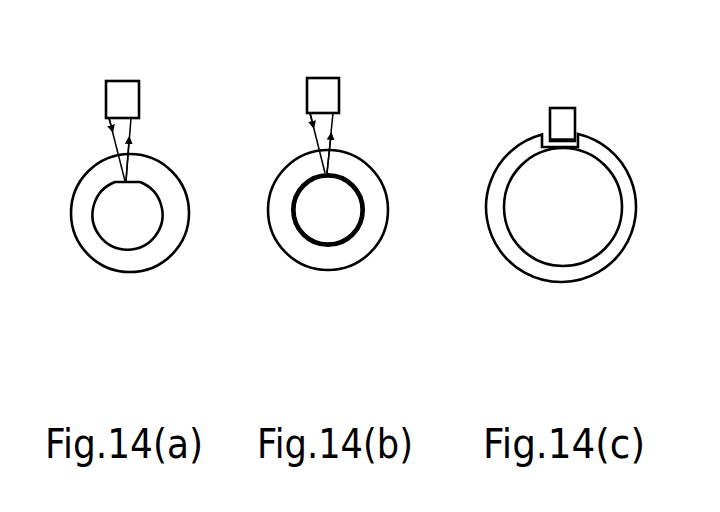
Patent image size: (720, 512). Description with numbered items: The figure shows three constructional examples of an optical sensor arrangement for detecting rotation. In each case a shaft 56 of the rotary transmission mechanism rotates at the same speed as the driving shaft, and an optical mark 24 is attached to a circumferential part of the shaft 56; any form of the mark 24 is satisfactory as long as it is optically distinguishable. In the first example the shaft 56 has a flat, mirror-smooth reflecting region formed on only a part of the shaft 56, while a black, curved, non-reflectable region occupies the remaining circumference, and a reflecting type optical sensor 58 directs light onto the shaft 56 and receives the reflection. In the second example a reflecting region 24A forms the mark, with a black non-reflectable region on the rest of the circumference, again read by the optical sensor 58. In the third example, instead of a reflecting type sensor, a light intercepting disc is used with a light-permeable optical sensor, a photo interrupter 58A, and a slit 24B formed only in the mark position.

In FIG. 14A, the optical mark 24 is at (132, 180).
In FIG. 14B, the reflecting region 24A is at (338, 175).
In FIG. 14C, the slit 24B is at (575, 130).
In FIG. 14A, the shaft 56 is at (117, 237).
In FIG. 14B, the shaft 56 is at (327, 233).
In FIG. 14C, the shaft 56 is at (585, 247).
In FIG. 14A, the optical sensor 58 is at (120, 88).
In FIG. 14B, the optical sensor 58 is at (317, 87).
In FIG. 14C, the light-permeable optical sensor (photo interrupter) 58A is at (562, 118).